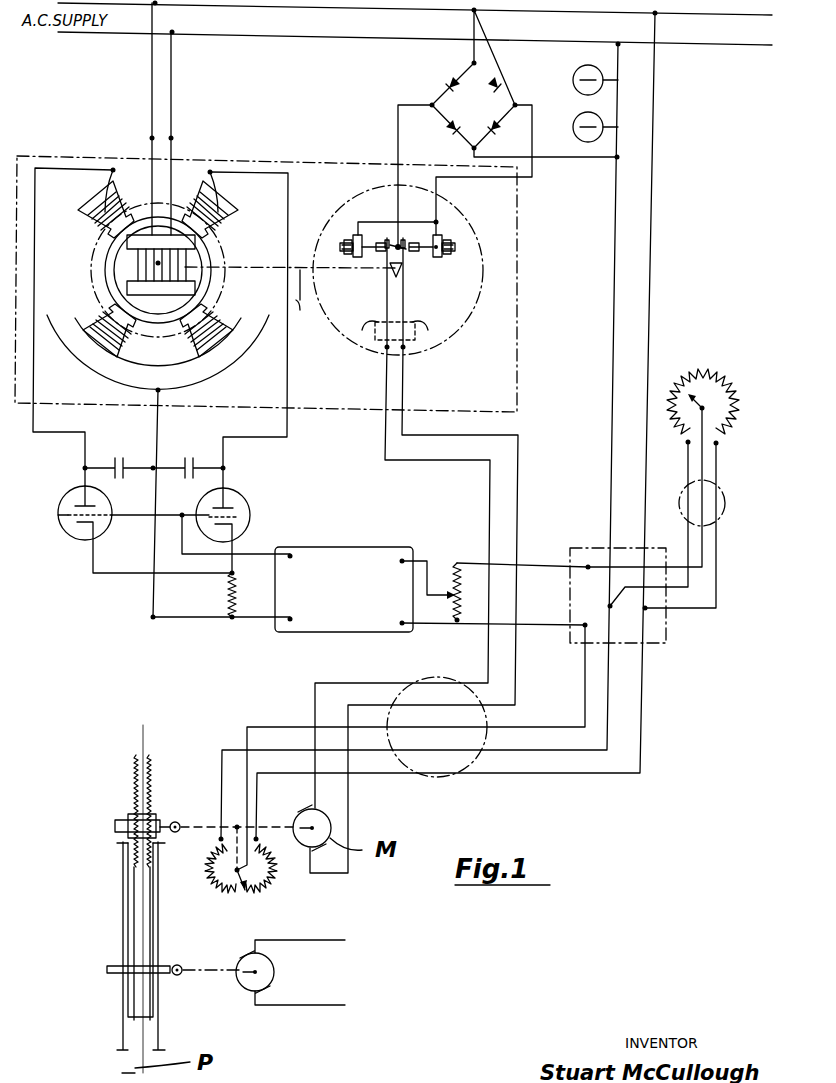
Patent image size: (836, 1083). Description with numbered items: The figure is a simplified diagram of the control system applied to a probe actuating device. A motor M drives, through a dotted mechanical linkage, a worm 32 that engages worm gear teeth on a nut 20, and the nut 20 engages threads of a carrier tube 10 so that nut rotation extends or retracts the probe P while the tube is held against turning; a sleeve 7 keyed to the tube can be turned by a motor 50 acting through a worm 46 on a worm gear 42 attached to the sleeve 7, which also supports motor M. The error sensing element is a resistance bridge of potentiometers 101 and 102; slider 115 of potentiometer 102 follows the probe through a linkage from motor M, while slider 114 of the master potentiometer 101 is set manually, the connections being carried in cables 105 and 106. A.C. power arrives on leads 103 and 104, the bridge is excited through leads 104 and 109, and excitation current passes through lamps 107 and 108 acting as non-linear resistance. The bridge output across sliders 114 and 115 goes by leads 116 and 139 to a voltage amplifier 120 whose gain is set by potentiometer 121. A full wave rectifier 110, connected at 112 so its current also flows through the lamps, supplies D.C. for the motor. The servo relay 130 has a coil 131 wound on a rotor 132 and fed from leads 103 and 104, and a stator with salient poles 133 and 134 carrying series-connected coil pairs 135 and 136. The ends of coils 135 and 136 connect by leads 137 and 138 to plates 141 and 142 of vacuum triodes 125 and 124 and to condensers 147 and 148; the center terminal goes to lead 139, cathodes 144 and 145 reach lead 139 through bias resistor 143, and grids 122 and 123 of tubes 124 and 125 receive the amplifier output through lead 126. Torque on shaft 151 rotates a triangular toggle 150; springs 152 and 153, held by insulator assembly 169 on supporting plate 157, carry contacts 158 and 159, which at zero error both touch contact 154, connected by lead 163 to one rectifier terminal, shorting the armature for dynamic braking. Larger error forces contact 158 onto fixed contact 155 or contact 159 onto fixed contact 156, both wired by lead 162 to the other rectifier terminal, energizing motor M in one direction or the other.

The sleeve 7 is at (123, 900).
The carrier tube 10 is at (135, 760).
The nut 20 is at (125, 818).
The worm 32 is at (178, 820).
The worm gear 42 is at (108, 966).
The worm 46 is at (178, 977).
The motor 50 is at (275, 970).
The input or master potentiometer 101 is at (705, 375).
The potentiometer 102 is at (270, 890).
The lead 103 is at (728, 48).
The lead 104 is at (703, 16).
The cable 105 is at (726, 500).
The cable 106 is at (460, 780).
The lamp 107 is at (574, 76).
The lamp 108 is at (574, 117).
The lead 109 is at (613, 300).
The full wave rectifier 110 is at (474, 79).
The connection point 112 is at (615, 160).
The slider 114 is at (688, 394).
The slider 115 is at (216, 896).
The lead 116 is at (542, 562).
The voltage amplifier 120 is at (344, 589).
The potentiometer 121 is at (440, 590).
The grid 122 is at (247, 516).
The grid 123 is at (62, 520).
The vacuum triode 124 is at (240, 492).
The vacuum triode 125 is at (58, 506).
The lead 126 is at (288, 553).
The servo relay 130 is at (517, 370).
The coil 131 is at (158, 158).
The rotor 132 is at (225, 237).
The salient pole 133 is at (185, 192).
The salient pole 134 is at (122, 187).
The coil pair 135 is at (214, 216).
The coil pair 136 is at (105, 205).
The lead 137 is at (50, 165).
The lead 138 is at (268, 166).
The lead 139 is at (540, 652).
The plate 141 is at (80, 500).
The plate 142 is at (249, 504).
The bias resistor 143 is at (226, 595).
The cathode 144 is at (249, 523).
The cathode 145 is at (82, 536).
The condenser 147 is at (113, 456).
The condenser 148 is at (185, 462).
The triangular toggle or lever 150 is at (407, 270).
The shaft 151 is at (309, 303).
The spring 152 is at (387, 350).
The spring 153 is at (405, 348).
The contact 154 is at (396, 244).
The fixed contact 155 is at (360, 258).
The fixed contact 156 is at (440, 258).
The supporting plate 157 is at (458, 322).
The contact 158 is at (358, 224).
The contact 159 is at (440, 224).
The lead 162 is at (535, 177).
The lead 163 is at (398, 110).
The insulator assembly 169 is at (405, 372).